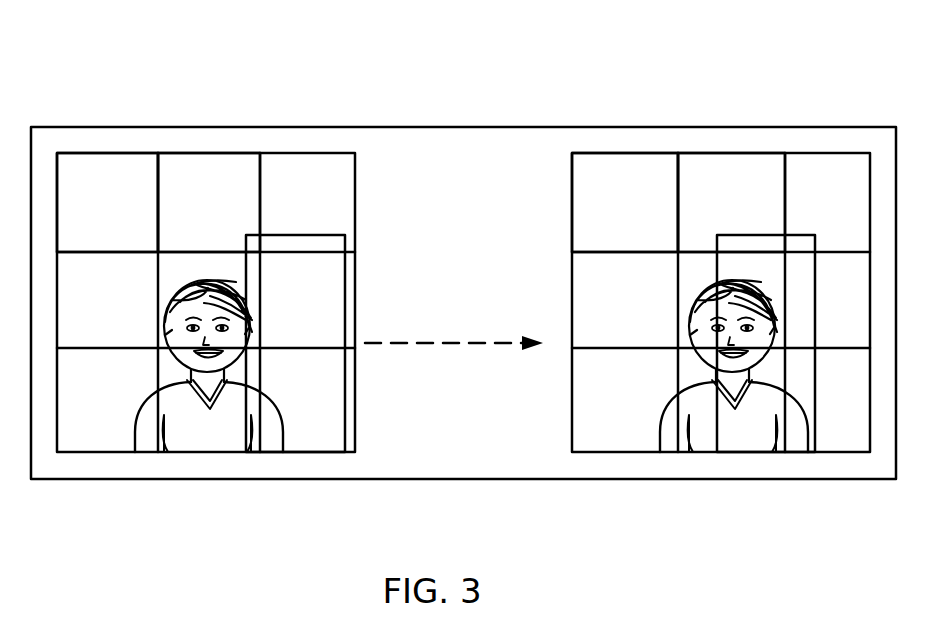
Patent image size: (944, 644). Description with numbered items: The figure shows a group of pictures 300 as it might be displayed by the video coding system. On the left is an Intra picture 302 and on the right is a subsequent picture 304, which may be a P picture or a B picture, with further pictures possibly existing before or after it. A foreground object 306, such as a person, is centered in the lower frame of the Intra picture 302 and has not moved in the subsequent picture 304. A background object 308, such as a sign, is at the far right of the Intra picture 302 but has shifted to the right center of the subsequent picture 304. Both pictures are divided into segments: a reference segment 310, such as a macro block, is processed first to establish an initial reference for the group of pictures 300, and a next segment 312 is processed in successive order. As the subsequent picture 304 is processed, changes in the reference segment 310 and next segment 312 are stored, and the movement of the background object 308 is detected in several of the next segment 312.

The group of pictures 300 is at (158, 66).
The Intra picture 302 is at (53, 495).
The subsequent picture 304 is at (577, 495).
The foreground object 306 is at (238, 404).
The background object 308 is at (802, 288).
The reference segment 310 is at (82, 211).
The next segment 312 is at (187, 211).